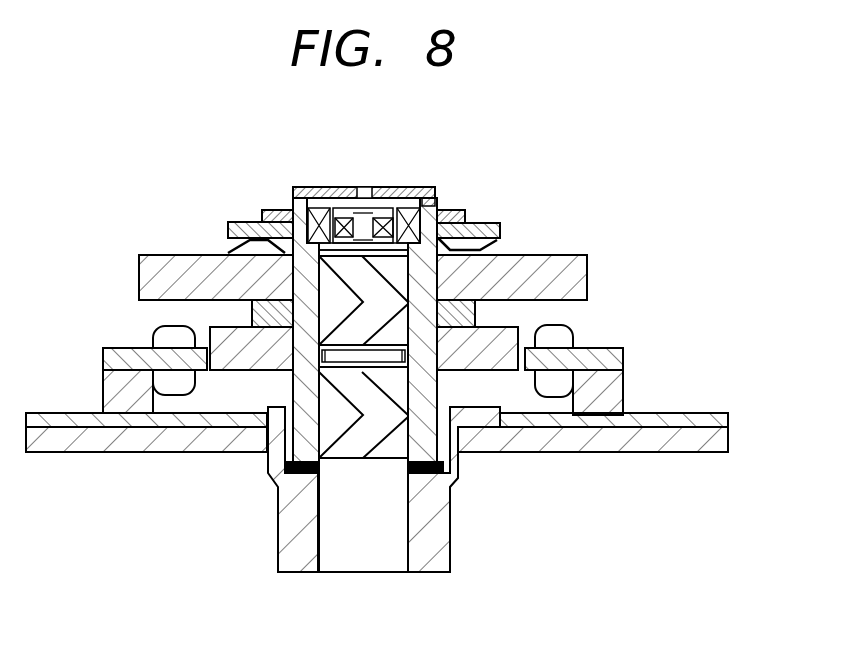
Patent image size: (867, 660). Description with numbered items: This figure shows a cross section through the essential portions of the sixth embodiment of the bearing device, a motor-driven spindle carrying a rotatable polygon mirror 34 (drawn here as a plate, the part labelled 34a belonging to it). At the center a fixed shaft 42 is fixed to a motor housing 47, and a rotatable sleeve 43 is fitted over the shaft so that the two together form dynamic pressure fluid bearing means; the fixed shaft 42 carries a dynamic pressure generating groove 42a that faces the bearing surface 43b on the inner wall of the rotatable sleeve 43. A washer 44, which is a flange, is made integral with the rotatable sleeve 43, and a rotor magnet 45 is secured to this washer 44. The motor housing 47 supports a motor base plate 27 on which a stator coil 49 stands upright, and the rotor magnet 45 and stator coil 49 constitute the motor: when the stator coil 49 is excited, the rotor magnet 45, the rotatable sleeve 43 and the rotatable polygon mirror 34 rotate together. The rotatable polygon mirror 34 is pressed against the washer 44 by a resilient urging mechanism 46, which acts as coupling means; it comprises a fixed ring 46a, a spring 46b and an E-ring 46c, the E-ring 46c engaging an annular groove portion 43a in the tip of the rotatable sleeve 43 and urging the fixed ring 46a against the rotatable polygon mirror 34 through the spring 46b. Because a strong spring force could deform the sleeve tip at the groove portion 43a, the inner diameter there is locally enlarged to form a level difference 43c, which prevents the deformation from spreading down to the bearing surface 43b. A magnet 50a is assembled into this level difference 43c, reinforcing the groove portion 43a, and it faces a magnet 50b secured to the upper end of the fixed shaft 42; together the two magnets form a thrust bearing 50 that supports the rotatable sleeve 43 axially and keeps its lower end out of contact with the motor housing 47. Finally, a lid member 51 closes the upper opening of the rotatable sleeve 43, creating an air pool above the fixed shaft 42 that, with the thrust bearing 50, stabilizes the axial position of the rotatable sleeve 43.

The motor base plate 27 is at (728, 422).
The rotatable polygon mirror 34 is at (408, 287).
The yoke plate 34a is at (587, 256).
The fixed shaft 42 is at (363, 443).
The dynamic pressure generating groove 42a is at (350, 423).
The rotatable sleeve 43 is at (380, 373).
The annular groove portion 43a is at (437, 207).
The bearing surface 43b is at (333, 470).
The level difference 43c is at (309, 243).
The washer 44 is at (268, 310).
The rotor magnet 45 is at (498, 353).
The resilient urging mechanism 46 is at (432, 194).
The fixed ring 46a is at (500, 230).
The spring 46b is at (409, 225).
The E-ring 46c is at (468, 213).
The motor housing 47 is at (437, 557).
The stator coil 49 is at (562, 337).
The thrust bearing 50 is at (384, 167).
The magnet 50a is at (408, 212).
The magnet 50b is at (363, 189).
The lid member 51 is at (306, 186).